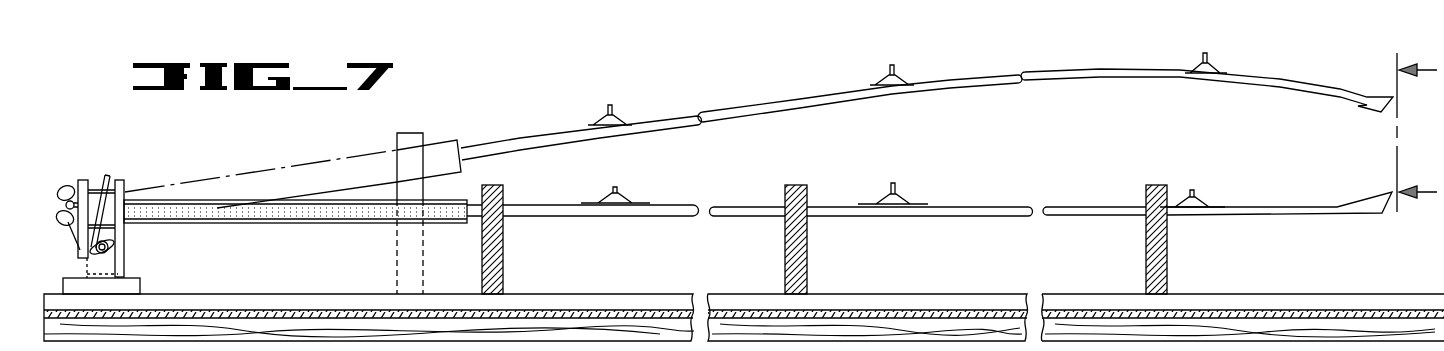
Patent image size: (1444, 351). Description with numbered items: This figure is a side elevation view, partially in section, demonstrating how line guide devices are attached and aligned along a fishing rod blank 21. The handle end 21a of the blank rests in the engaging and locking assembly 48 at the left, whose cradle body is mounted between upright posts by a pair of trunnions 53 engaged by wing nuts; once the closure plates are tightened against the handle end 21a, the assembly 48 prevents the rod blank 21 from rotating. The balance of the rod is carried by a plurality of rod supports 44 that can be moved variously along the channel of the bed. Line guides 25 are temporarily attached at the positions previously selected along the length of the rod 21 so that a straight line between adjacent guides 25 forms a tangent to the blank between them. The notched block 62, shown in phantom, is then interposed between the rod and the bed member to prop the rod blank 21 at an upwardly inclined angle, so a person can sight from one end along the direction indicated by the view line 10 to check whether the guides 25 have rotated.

The section line / direction of view 10 is at (1418, 130).
The fishing rod blank 21 is at (956, 87).
The handle end 21a is at (283, 222).
The line guides 25 is at (617, 187).
The rod supports 44 is at (504, 243).
The engaging and locking assembly 48 is at (96, 170).
The trunnions 53 is at (112, 248).
The notched block 62 is at (397, 245).